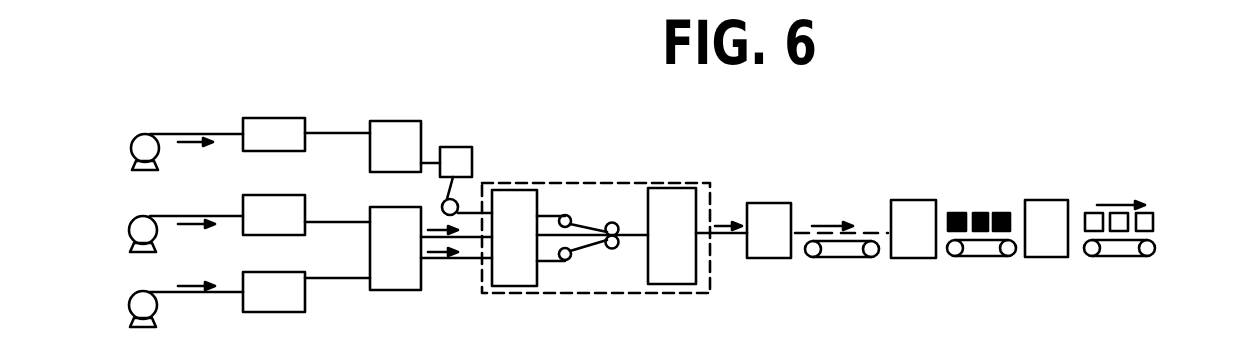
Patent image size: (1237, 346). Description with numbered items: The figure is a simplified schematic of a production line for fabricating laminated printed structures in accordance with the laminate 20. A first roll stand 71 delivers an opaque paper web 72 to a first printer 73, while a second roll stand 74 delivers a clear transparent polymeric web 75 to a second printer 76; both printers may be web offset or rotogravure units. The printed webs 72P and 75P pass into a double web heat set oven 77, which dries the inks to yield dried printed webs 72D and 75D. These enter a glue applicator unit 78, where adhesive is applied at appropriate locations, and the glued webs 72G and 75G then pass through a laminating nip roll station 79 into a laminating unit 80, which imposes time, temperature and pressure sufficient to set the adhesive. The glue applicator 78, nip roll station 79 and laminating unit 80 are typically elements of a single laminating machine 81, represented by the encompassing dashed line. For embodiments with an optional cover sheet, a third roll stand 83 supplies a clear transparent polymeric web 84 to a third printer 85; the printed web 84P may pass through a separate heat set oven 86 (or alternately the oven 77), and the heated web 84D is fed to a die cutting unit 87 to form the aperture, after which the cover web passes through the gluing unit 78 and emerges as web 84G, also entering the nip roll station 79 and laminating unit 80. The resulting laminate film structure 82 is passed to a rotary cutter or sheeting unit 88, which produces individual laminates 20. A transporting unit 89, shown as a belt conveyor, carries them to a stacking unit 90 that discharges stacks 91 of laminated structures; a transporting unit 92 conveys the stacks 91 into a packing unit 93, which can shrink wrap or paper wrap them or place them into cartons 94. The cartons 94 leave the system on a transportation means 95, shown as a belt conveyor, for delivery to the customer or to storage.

The laminate 20 is at (803, 232).
The first roll stand 71 is at (142, 305).
The opaque paper web 72 is at (190, 293).
The dried printed web 72D is at (447, 259).
The web having glue applied 72G is at (550, 265).
The printed web 72P is at (345, 280).
The first printer 73 is at (270, 312).
The second roll stand 74 is at (147, 228).
The clear transparent polymeric web 75 is at (169, 215).
The dried printed web 75D is at (464, 238).
The web having glue applied 75G is at (580, 230).
The printed web 75P is at (325, 222).
The second printer 76 is at (272, 235).
The double web heat set oven 77 is at (395, 248).
The glue applicator unit 78 is at (514, 238).
The laminating nip roll station 79 is at (616, 249).
The laminating unit 80 is at (672, 236).
The laminating machine 81 is at (613, 205).
The laminate film structure 82 is at (726, 234).
The third roll stand 83 is at (142, 150).
The clear transparent polymeric web 84 is at (170, 133).
The heated web 84D is at (431, 155).
The web having adhesive 84G is at (549, 214).
The printed web 84P is at (333, 133).
The third printer 85 is at (250, 118).
The separate heat set oven 86 is at (390, 132).
The die cutting unit 87 is at (473, 158).
The rotary cutter or sheeting unit 88 is at (765, 215).
The transporting unit 89 is at (835, 247).
The stacking unit 90 is at (909, 210).
The stacks 91 is at (958, 213).
The transporting unit 92 is at (983, 245).
The packing unit 93 is at (1047, 213).
The cartons 94 is at (1090, 213).
The transportation means 95 is at (1118, 245).